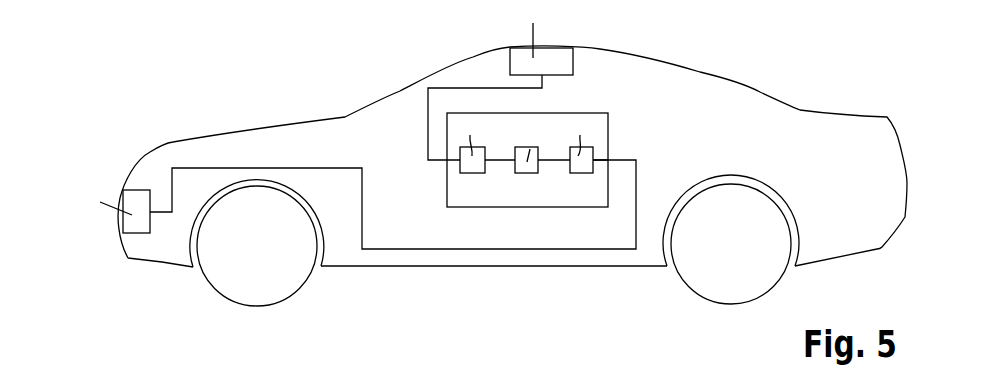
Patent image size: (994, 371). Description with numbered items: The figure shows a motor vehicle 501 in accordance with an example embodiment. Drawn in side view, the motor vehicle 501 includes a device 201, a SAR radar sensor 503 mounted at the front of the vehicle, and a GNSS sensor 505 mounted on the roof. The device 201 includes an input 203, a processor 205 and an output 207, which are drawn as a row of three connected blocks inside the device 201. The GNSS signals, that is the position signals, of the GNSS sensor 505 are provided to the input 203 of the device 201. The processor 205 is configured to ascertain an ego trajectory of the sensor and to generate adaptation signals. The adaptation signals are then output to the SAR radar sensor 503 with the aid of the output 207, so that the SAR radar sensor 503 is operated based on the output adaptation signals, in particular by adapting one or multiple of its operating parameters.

The motor vehicle 501 is at (700, 72).
The GNSS sensor 505 is at (573, 62).
The SAR radar sensor 503 is at (137, 233).
The device 201 is at (608, 133).
The input 203 is at (473, 173).
The processor 205 is at (527, 173).
The output 207 is at (582, 173).